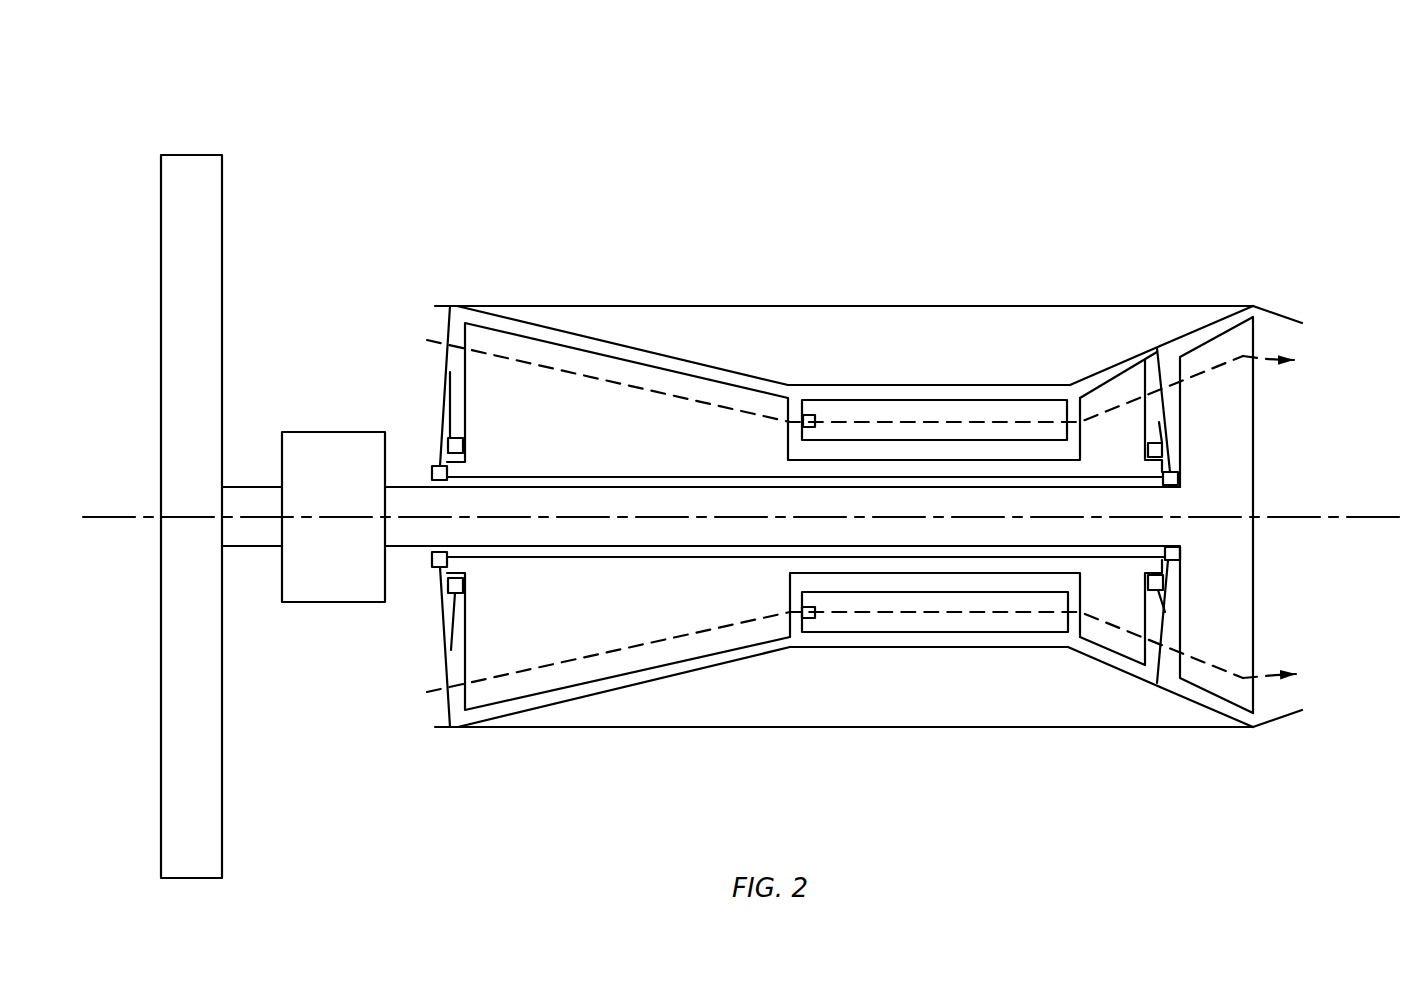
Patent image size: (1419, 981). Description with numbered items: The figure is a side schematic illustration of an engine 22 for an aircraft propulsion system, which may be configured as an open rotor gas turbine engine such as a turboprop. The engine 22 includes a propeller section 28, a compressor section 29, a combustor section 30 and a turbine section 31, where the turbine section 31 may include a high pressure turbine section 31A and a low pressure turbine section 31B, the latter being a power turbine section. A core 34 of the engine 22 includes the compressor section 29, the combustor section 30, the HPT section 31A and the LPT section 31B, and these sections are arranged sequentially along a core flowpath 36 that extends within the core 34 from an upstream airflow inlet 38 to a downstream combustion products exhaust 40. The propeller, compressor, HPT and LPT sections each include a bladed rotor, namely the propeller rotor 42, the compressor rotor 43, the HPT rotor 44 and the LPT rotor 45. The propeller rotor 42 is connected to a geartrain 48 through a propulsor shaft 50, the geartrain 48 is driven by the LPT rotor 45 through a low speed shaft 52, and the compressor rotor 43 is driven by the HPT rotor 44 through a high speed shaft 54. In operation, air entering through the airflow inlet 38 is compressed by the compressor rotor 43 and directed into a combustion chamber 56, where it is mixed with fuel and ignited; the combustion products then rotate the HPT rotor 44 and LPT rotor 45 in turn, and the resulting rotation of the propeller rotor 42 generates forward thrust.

The engine 22 is at (1065, 157).
The propeller section 28 is at (219, 132).
The compressor section 29 is at (648, 338).
The combustor section 30 is at (918, 370).
The turbine section 31 is at (1085, 235).
The high pressure turbine (HPT) section 31A is at (1085, 458).
The low pressure turbine (LPT) section 31B is at (1207, 325).
The core 34 is at (773, 243).
The core flowpath 36 is at (568, 375).
The airflow inlet 38 is at (432, 327).
The combustion products exhaust 40 is at (1300, 347).
The propeller rotor 42 is at (222, 250).
The compressor rotor 43 is at (452, 372).
The HPT rotor 44 is at (1093, 390).
The LPT rotor 45 is at (1253, 397).
The geartrain 48 is at (331, 602).
The propulsor shaft 50 is at (255, 547).
The low speed shaft 52 is at (407, 547).
The high speed shaft 54 is at (876, 478).
The combustion chamber 56 is at (850, 410).